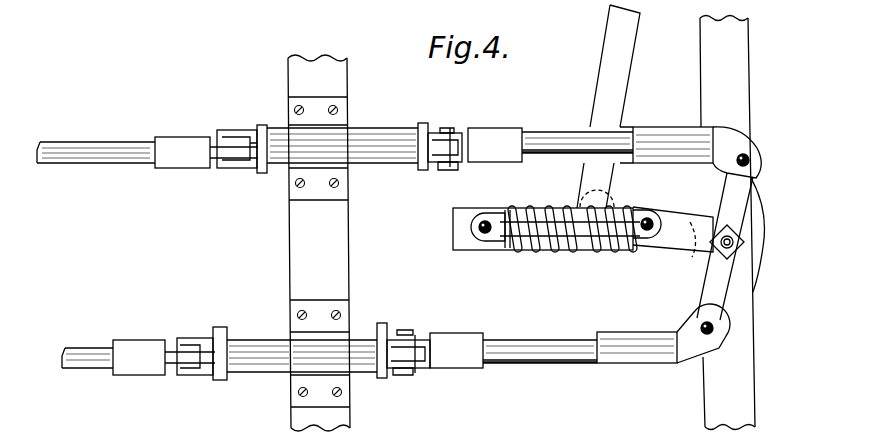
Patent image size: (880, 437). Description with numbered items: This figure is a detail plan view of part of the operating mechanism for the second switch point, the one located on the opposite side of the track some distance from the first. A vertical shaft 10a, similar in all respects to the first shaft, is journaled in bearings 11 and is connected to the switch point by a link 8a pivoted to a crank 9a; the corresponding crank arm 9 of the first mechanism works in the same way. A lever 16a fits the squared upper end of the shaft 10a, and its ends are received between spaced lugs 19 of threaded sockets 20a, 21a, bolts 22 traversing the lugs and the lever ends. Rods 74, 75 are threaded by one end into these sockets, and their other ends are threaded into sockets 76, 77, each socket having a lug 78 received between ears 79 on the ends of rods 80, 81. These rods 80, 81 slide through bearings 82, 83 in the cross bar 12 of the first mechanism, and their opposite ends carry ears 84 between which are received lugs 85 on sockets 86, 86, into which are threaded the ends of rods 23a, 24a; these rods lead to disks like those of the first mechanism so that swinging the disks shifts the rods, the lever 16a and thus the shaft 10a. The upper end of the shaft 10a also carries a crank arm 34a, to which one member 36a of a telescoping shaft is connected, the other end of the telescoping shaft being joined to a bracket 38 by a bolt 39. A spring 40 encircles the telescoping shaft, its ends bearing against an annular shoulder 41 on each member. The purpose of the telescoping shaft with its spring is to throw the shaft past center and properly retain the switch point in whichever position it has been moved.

The cross bar 12 is at (535, 222).
The rod 23a is at (96, 138).
The rod 24a is at (85, 342).
The socket 86 is at (161, 235).
The lug 85 is at (211, 261).
The ear 84 is at (238, 129).
The rod 80 is at (261, 170).
The rod 81 is at (252, 344).
The bearing 82 is at (347, 137).
The bearing 83 is at (339, 333).
The lug 78 is at (426, 234).
The ear 79 is at (425, 263).
The socket 76 is at (495, 132).
The socket 77 is at (459, 333).
The rod 74 is at (577, 128).
The rod 75 is at (540, 338).
The threaded socket 20a is at (666, 160).
The threaded socket 21a is at (637, 332).
The spaced lug 19 is at (722, 242).
The bolt 22 is at (745, 228).
The lever 16a is at (745, 244).
The shaft 10a is at (750, 255).
The bearing 11 is at (769, 235).
The crank arm 9 is at (673, 243).
The crank 9a is at (606, 191).
The link 8a is at (616, 106).
The bracket 38 is at (520, 229).
The bolt 39 is at (490, 211).
The spring 40 is at (506, 245).
The annular shoulder 41 is at (572, 214).
The telescoping shaft member 36a is at (570, 251).
The crank arm 34a is at (635, 244).